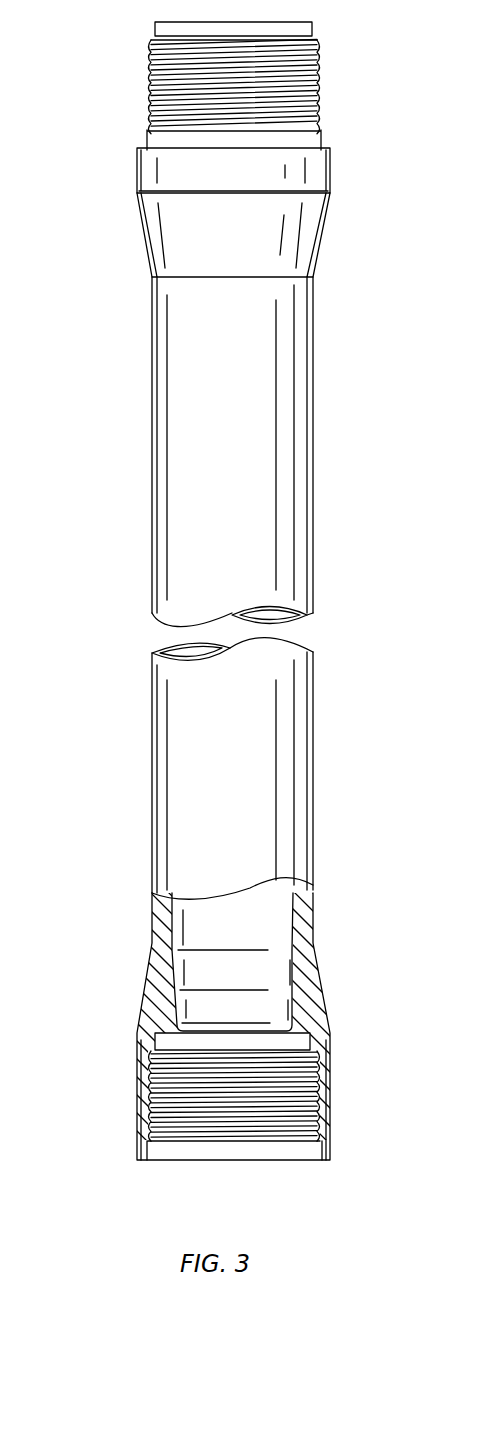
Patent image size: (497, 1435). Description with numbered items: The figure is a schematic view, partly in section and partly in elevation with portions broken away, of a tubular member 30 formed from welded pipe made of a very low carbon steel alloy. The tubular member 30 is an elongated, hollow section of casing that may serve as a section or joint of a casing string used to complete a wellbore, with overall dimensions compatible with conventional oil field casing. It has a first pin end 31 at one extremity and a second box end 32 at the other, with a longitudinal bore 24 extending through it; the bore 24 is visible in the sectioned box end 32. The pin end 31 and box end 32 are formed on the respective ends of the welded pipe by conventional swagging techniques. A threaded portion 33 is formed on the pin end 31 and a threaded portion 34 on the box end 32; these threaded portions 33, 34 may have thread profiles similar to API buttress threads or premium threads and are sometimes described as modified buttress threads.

The longitudinal bore 24 is at (246, 931).
The tubular member 30 is at (118, 506).
The first pin end 31 is at (196, 149).
The second box end 32 is at (248, 1044).
The threaded portion 33 is at (148, 56).
The threaded portion 34 is at (152, 1130).